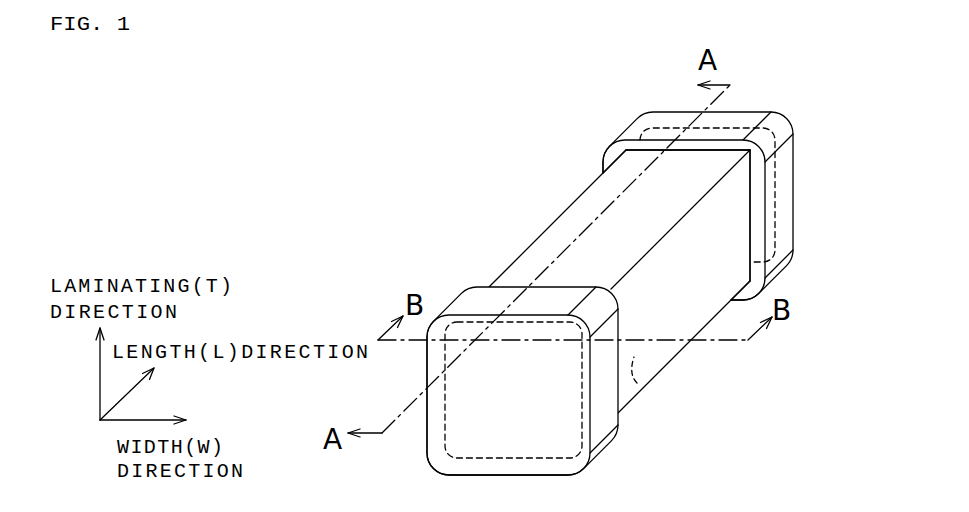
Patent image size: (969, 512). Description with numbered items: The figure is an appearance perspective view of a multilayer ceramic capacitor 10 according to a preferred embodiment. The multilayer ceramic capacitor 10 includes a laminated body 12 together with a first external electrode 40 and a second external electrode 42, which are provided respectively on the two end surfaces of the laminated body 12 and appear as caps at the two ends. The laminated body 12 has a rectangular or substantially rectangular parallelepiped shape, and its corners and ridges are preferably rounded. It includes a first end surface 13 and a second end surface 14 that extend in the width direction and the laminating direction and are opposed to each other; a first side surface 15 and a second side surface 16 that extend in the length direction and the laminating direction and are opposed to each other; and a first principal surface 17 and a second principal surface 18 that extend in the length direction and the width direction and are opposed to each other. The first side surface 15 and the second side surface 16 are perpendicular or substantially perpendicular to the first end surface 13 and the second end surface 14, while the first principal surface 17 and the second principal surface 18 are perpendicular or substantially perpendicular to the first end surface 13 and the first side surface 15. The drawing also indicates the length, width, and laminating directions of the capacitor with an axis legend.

The multilayer ceramic capacitor 10 is at (432, 147).
The laminated body 12 is at (612, 244).
The first end surface 13 is at (513, 443).
The second end surface 14 is at (664, 128).
The first side surface 15 is at (658, 354).
The second side surface 16 is at (533, 266).
The first principal surface 17 is at (592, 200).
The second principal surface 18 is at (637, 383).
The first external electrode 40 is at (553, 399).
The second external electrode 42 is at (788, 177).